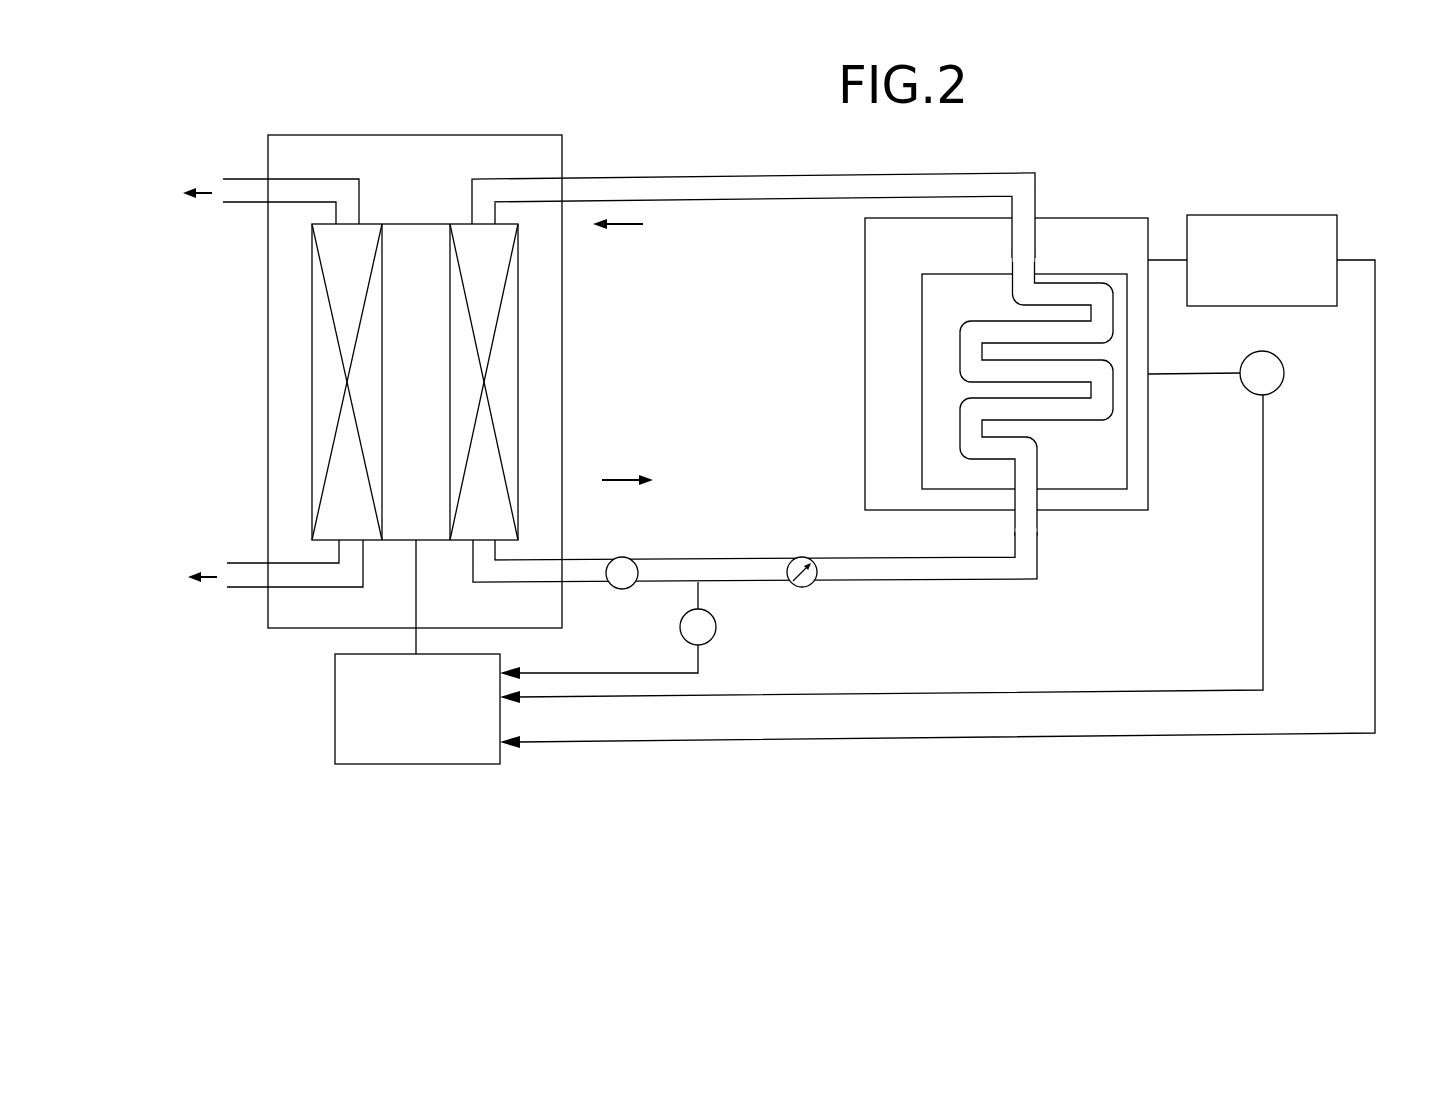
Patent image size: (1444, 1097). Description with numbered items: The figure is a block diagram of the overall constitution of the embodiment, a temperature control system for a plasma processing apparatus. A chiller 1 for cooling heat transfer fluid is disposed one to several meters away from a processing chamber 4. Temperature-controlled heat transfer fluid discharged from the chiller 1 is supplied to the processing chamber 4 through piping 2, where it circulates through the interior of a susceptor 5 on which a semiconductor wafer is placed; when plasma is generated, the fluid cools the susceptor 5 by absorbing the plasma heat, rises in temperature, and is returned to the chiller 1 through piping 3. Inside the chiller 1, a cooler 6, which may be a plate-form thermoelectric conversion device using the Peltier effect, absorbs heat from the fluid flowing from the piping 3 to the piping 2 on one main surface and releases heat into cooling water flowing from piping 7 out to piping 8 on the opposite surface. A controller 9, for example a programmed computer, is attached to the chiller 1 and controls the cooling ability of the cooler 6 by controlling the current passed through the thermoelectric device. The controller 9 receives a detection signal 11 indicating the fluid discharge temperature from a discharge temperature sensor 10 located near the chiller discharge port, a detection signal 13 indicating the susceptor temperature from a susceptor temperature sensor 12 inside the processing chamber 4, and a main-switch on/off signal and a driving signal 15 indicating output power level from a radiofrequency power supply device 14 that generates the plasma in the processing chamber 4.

The chiller 1 is at (385, 135).
The piping 2 is at (753, 584).
The piping 3 is at (677, 175).
The processing chamber 4 is at (1068, 218).
The susceptor 5 is at (1050, 274).
The cooler 6 is at (414, 395).
The piping 7 is at (253, 562).
The piping 8 is at (246, 178).
The controller 9 is at (437, 764).
The discharge temperature sensor 10 is at (717, 626).
The detection signal 11 is at (585, 673).
The susceptor temperature sensor 12 is at (1245, 388).
The detection signal 13 is at (1263, 530).
The radiofrequency power supply device 14 is at (1260, 215).
The driving signal 15 is at (1375, 480).